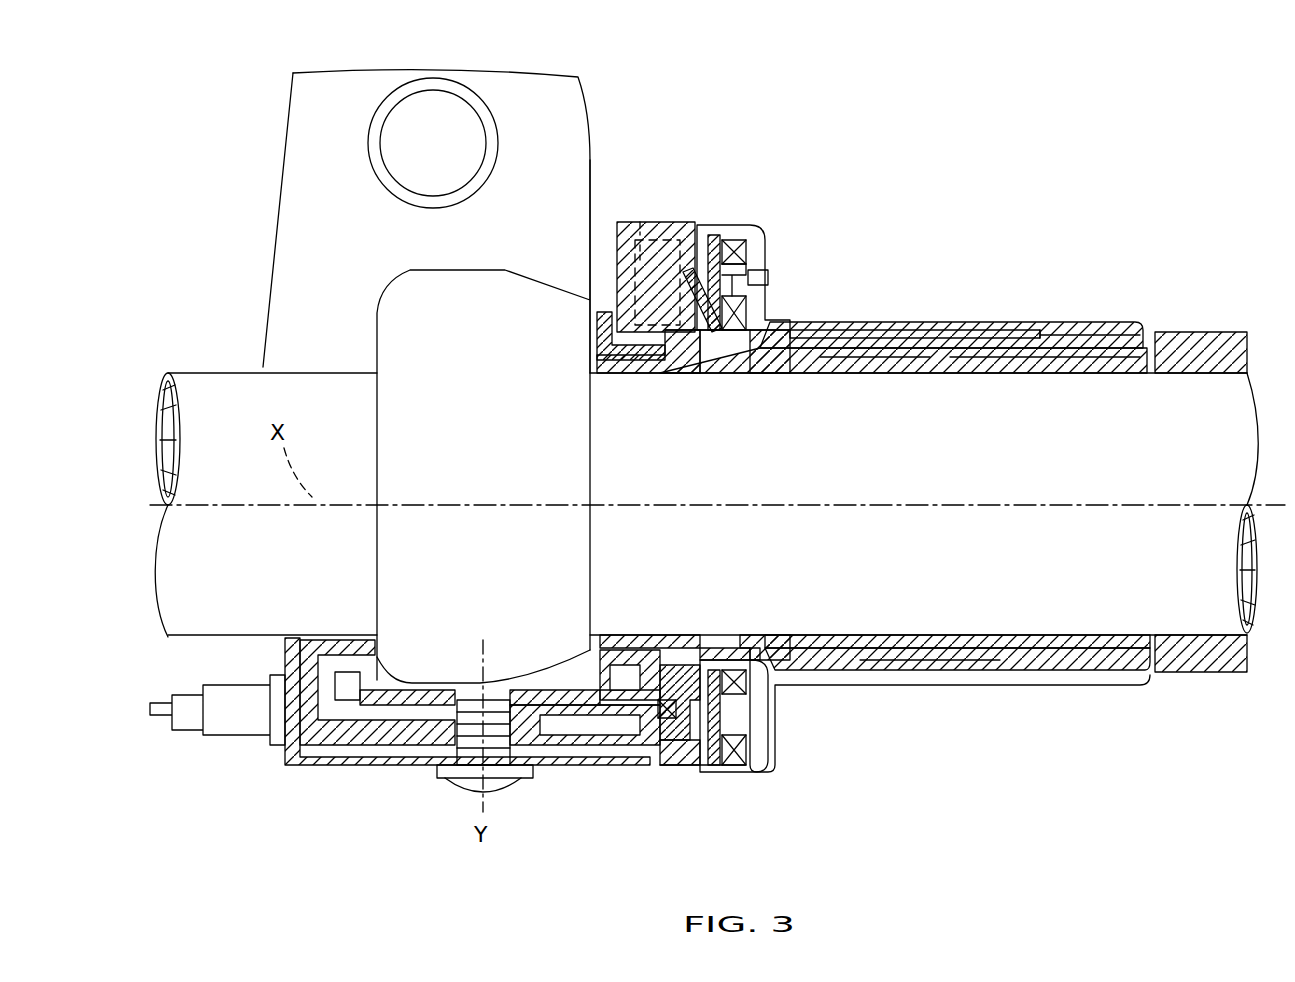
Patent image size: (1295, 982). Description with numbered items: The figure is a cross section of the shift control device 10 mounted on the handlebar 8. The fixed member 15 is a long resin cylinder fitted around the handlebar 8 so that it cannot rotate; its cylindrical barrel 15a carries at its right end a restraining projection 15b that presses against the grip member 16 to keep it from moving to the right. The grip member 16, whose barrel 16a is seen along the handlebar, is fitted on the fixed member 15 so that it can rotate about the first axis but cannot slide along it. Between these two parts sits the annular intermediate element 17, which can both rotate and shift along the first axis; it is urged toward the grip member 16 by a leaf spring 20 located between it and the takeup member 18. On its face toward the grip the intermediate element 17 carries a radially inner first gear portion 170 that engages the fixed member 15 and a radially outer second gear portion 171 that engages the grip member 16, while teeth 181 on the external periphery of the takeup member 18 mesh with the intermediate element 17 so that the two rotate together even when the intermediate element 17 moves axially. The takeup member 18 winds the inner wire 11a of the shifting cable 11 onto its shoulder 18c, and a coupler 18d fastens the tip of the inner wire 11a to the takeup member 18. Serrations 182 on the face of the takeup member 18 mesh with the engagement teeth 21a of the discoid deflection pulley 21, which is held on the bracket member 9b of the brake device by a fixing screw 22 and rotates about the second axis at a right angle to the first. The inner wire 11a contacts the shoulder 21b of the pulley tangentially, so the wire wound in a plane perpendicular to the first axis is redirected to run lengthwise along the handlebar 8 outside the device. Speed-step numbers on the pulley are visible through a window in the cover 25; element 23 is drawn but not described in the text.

The handlebar 8 is at (1198, 387).
The shift control device 10 is at (866, 183).
The bracket member 9b is at (296, 228).
The shifting cable 11 is at (197, 726).
The inner wire 11a is at (675, 350).
The fixed member 15 is at (898, 655).
The cylindrical barrel 15a is at (906, 355).
The restraining projection 15b is at (1146, 342).
The grip member 16 is at (978, 334).
The barrel 16a is at (1040, 334).
The intermediate element 17 is at (715, 227).
The takeup member 18 is at (665, 222).
The shoulder 18c is at (740, 657).
The coupler 18d is at (636, 224).
The leaf spring 20 is at (752, 274).
The deflection pulley 21 is at (588, 746).
The engagement teeth 21a is at (638, 737).
The shoulder 21b is at (315, 700).
The fixing screw 22 is at (510, 782).
The plate 23 is at (410, 690).
The cover 25 is at (306, 768).
The first gear portion 170 is at (750, 712).
The second gear portion 171 is at (752, 768).
The teeth 181 is at (740, 782).
The serrations 182 is at (665, 760).